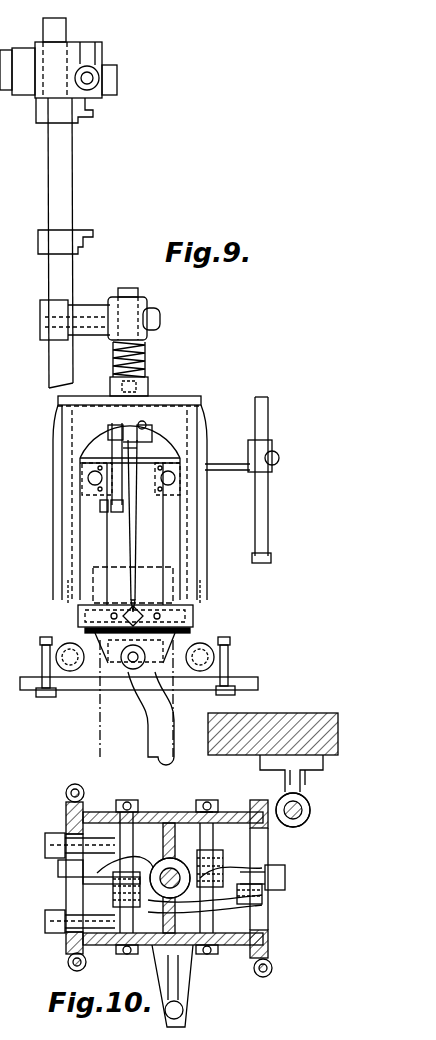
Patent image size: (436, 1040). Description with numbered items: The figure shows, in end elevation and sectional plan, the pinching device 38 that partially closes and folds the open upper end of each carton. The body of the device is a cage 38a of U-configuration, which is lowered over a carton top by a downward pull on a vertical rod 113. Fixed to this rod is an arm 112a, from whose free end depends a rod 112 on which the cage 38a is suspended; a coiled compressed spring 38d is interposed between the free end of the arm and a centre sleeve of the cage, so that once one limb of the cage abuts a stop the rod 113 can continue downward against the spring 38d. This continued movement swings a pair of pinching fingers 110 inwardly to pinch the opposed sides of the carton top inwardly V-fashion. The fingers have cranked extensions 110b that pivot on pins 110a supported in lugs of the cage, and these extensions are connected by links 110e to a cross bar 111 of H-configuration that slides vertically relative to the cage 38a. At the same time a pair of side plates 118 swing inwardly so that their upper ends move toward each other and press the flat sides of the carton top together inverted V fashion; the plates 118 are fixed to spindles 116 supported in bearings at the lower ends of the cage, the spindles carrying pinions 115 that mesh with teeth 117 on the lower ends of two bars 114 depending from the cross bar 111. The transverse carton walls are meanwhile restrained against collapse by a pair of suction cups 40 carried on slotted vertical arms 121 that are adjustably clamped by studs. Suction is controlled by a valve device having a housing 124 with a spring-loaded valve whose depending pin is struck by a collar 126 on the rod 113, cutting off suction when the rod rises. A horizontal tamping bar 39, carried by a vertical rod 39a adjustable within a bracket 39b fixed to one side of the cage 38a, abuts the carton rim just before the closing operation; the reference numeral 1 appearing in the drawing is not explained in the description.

In FIG. 9, the housing 124 is at (100, 55).
In FIG. 9, the collar 126 is at (75, 116).
In FIG. 9, the vertical rod 113 is at (50, 359).
In FIG. 10, the vertical rod 113 is at (293, 798).
In FIG. 9, the arm 112a is at (93, 308).
In FIG. 9, the coiled compressed spring 38d is at (145, 368).
In FIG. 9, the rod 112 is at (148, 392).
In FIG. 10, the rod 112 is at (176, 858).
In FIG. 9, the cage 38a is at (56, 432).
In FIG. 10, the pinching device 38 is at (184, 815).
In FIG. 9, the pinching fingers 110 is at (135, 553).
In FIG. 9, the pins 110a is at (178, 440).
In FIG. 10, the pins 110a is at (135, 920).
In FIG. 9, the cranked extensions 110b is at (128, 440).
In FIG. 10, the cranked extensions 110b is at (135, 868).
In FIG. 9, the links 110e is at (104, 511).
In FIG. 10, the links 110e is at (273, 905).
In FIG. 10, the cross bar 111 is at (106, 884).
In FIG. 10, the bars 114 is at (58, 860).
In FIG. 9, the side plates 118 is at (70, 592).
In FIG. 9, the teeth 117 is at (84, 645).
In FIG. 9, the pinions 115 is at (56, 660).
In FIG. 9, the spindles 116 is at (72, 672).
In FIG. 9, the suction cups 40 is at (133, 672).
In FIG. 9, the machine 1 is at (100, 730).
In FIG. 9, the slotted vertical arms 121 is at (151, 725).
In FIG. 9, the horizontal bar 39 is at (271, 559).
In FIG. 9, the vertical rod 39a is at (268, 507).
In FIG. 9, the bracket 39b is at (272, 443).
In FIG. 10, the bracket 39b is at (184, 1008).